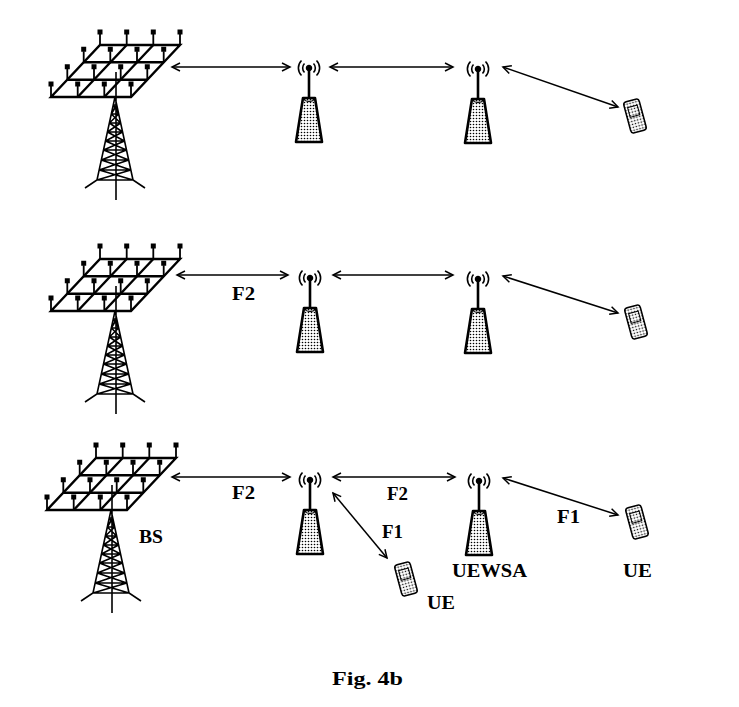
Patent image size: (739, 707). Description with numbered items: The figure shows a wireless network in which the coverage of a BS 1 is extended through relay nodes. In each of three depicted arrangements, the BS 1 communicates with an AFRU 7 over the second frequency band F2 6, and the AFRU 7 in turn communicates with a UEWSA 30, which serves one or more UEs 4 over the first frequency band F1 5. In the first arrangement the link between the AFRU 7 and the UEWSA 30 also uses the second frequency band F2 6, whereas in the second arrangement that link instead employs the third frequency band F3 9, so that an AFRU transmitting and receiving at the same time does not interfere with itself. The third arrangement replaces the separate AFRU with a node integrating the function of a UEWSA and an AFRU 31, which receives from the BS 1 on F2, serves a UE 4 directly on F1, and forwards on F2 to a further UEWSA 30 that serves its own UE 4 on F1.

The BS 1 is at (145, 162).
The UE 4 is at (653, 121).
The first frequency band F1 5 is at (547, 104).
The second frequency band F2 6 is at (218, 82).
The AFRU 7 is at (328, 132).
The third frequency band F3 9 is at (405, 295).
The UEWSA 30 is at (500, 135).
The node integrating the function of a UEWSA and an AFRU 31 is at (290, 540).